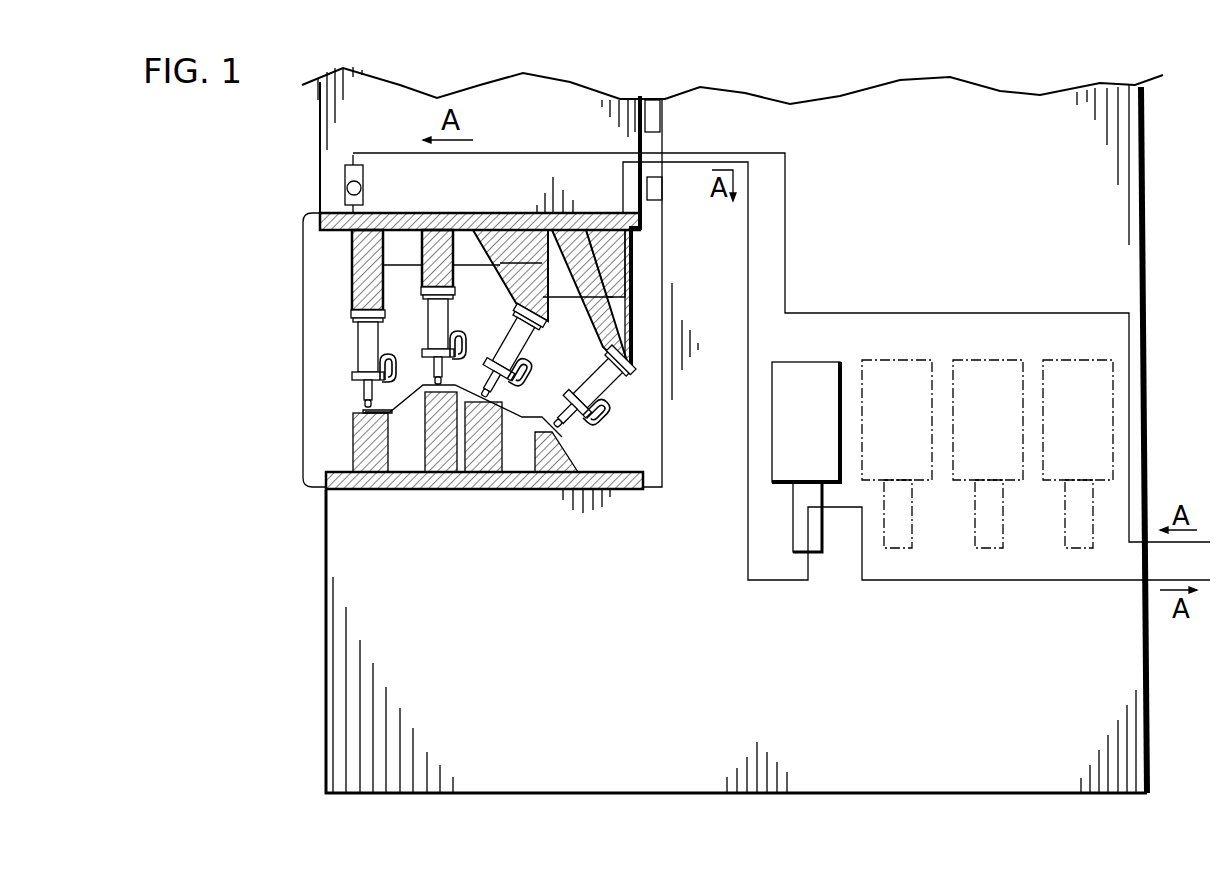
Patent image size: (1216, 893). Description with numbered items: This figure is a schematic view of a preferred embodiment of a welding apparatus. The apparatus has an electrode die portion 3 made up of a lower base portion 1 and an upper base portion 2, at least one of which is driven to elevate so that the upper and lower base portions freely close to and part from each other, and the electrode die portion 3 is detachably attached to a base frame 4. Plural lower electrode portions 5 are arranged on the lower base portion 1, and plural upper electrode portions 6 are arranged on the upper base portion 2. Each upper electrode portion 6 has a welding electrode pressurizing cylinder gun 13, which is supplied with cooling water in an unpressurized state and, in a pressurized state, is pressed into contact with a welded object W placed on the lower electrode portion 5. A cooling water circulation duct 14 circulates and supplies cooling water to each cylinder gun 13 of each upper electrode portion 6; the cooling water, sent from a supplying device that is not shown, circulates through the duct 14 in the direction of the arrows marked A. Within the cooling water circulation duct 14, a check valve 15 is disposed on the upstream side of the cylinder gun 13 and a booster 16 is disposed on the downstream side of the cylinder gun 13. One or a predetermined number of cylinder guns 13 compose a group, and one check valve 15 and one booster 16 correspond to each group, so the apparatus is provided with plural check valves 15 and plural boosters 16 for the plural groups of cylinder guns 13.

The lower base portion 1 is at (411, 491).
The upper base portion 2 is at (457, 213).
The electrode die portion 3 is at (300, 353).
The base frame 4 is at (325, 550).
The lower electrode portion 5 is at (551, 456).
The upper electrode portion 6 is at (633, 279).
The welding electrode pressurizing cylinder gun 13 is at (522, 352).
The cooling water circulation duct 14 is at (786, 198).
The check valve 15 is at (342, 180).
The booster 16 is at (808, 360).
The welded object W is at (468, 386).